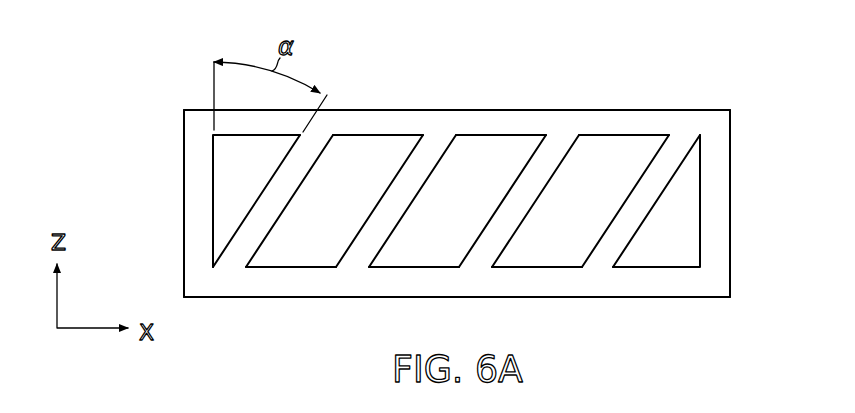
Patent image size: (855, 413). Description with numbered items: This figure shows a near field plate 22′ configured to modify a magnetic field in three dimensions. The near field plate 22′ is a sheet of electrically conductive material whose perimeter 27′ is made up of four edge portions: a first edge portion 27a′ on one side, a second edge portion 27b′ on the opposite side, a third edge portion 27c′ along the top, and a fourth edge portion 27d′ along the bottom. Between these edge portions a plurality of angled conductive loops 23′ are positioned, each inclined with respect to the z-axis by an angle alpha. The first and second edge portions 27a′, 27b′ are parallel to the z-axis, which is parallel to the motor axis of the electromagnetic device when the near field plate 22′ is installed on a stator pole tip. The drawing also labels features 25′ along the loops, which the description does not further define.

The near field plate 22′ is at (434, 186).
The angled conductive loops 23′ is at (266, 184).
The slots 25′ is at (223, 203).
The perimeter 27′ is at (458, 186).
The first edge portion 27a′ is at (193, 227).
The second edge portion 27b′ is at (722, 227).
The third edge portion 27c′ is at (583, 118).
The fourth edge portion 27d′ is at (612, 292).